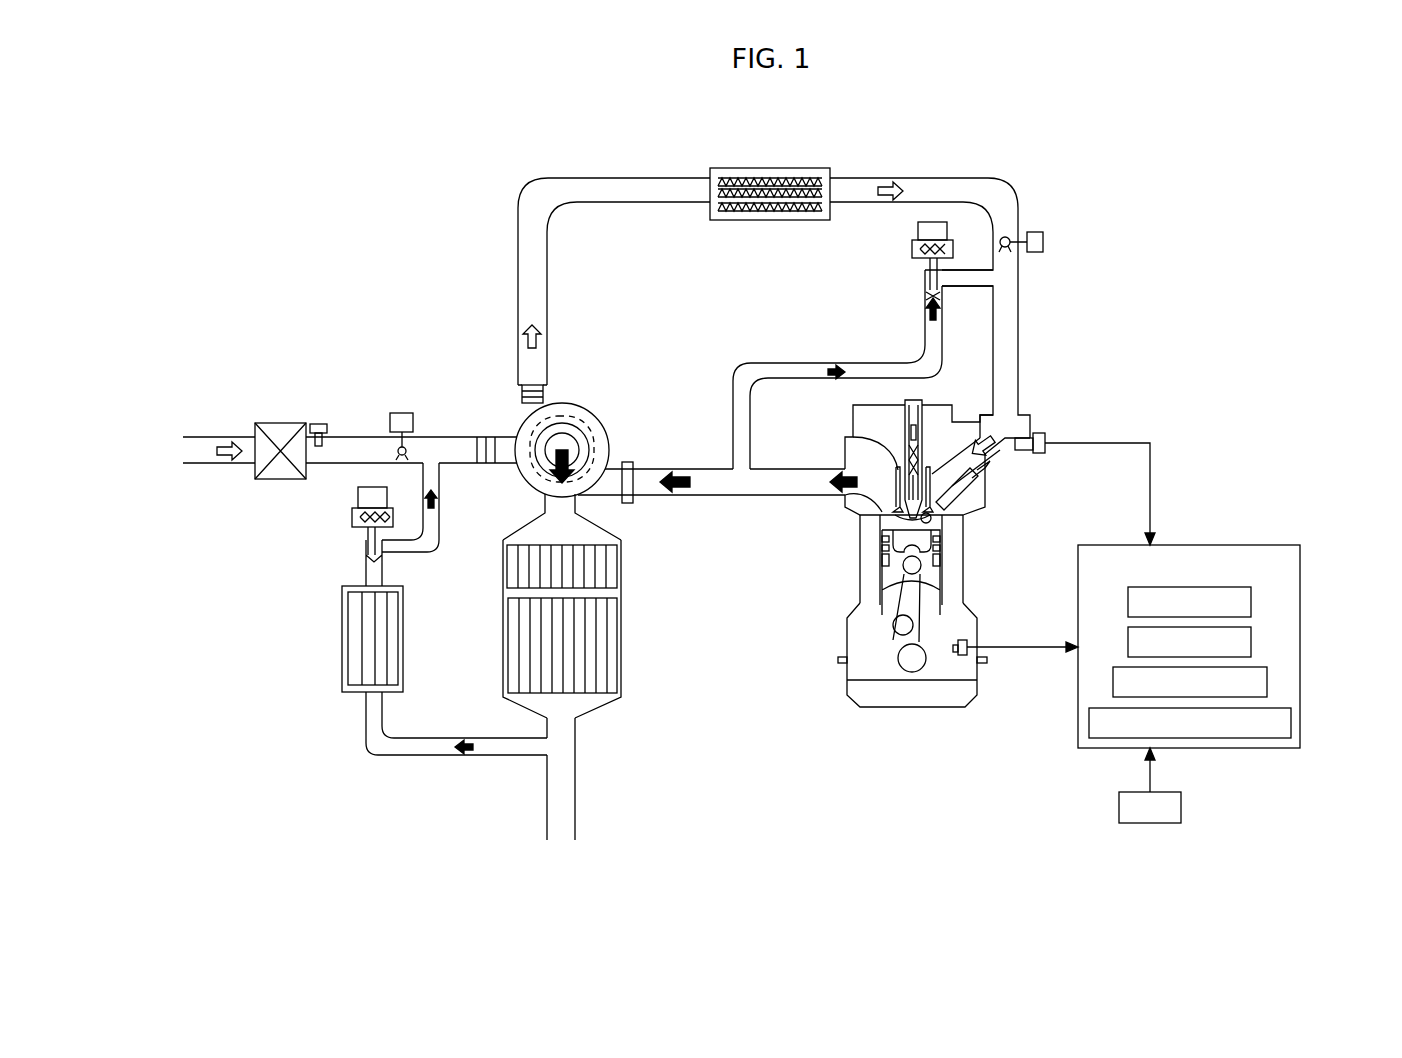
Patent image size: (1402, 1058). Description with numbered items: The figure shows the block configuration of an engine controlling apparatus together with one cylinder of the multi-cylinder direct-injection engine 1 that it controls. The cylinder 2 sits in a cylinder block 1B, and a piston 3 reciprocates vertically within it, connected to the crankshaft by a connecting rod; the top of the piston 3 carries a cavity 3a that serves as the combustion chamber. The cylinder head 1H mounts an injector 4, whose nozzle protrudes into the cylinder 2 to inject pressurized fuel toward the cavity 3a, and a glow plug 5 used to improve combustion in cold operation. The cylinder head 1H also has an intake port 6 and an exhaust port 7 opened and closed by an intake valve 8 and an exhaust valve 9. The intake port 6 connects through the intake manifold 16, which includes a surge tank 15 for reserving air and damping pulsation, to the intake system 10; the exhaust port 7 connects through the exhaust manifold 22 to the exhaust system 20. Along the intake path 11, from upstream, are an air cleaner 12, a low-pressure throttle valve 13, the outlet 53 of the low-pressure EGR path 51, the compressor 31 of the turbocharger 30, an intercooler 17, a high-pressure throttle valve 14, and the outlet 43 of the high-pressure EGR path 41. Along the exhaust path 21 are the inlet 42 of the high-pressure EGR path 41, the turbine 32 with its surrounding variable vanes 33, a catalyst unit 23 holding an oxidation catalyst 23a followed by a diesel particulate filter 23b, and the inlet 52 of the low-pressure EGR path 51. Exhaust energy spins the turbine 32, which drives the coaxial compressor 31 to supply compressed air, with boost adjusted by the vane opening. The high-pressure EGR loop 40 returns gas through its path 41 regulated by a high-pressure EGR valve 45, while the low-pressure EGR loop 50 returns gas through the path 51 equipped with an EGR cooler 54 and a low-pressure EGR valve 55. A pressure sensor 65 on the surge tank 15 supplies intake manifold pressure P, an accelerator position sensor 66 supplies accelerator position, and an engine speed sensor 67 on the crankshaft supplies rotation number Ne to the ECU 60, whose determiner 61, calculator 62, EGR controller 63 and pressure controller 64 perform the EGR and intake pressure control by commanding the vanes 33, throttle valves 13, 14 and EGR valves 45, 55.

The engine 1 is at (928, 718).
The cylinder block 1B is at (965, 590).
The cylinder head 1H is at (850, 438).
The cylinder 2 is at (955, 575).
The piston 3 is at (888, 572).
The cavity 3a is at (928, 540).
The injector 4 is at (903, 460).
The glow plug 5 is at (985, 478).
The intake port 6 is at (950, 505).
The exhaust port 7 is at (892, 506).
The intake valve 8 is at (935, 513).
The exhaust valve 9 is at (893, 528).
The intake system 10 is at (475, 360).
The intake path 11 is at (476, 440).
The air cleaner 12 is at (283, 423).
The low-pressure throttle valve 13 is at (398, 449).
The high-pressure throttle valve 14 is at (1010, 239).
The surge tank 15 is at (1005, 420).
The intake manifold 16 is at (940, 463).
The intercooler 17 is at (773, 168).
The exhaust system 20 is at (527, 770).
The exhaust path 21 is at (783, 497).
The exhaust manifold 22 is at (875, 462).
The catalyst unit 23 is at (632, 623).
The oxidation catalyst 23a is at (617, 568).
The diesel particulate filter 23b is at (617, 668).
The turbocharger 30 is at (625, 420).
The compressor 31 is at (515, 465).
The turbine 32 is at (585, 483).
The variable vanes 33 is at (568, 410).
The high-pressure EGR loop 40 is at (853, 308).
The high-pressure EGR path 41 is at (818, 363).
The inlet of the high-pressure EGR path 42 is at (742, 478).
The outlet of the high-pressure EGR path 43 is at (995, 278).
The high-pressure EGR valve 45 is at (925, 300).
The low-pressure EGR loop 50 is at (322, 653).
The low-pressure EGR path 51 is at (366, 724).
The inlet of the low-pressure EGR path 52 is at (548, 747).
The outlet of the low-pressure EGR path 53 is at (432, 462).
The EGR cooler 54 is at (355, 616).
The low-pressure EGR valve 55 is at (366, 563).
The ECU 60 is at (1198, 545).
The determiner 61 is at (1251, 602).
The calculator 62 is at (1251, 643).
The EGR controller 63 is at (1267, 682).
The pressure controller 64 is at (1291, 722).
The pressure sensor 65 is at (1040, 455).
The accelerator position sensor 66 is at (1181, 808).
The engine speed sensor 67 is at (965, 658).